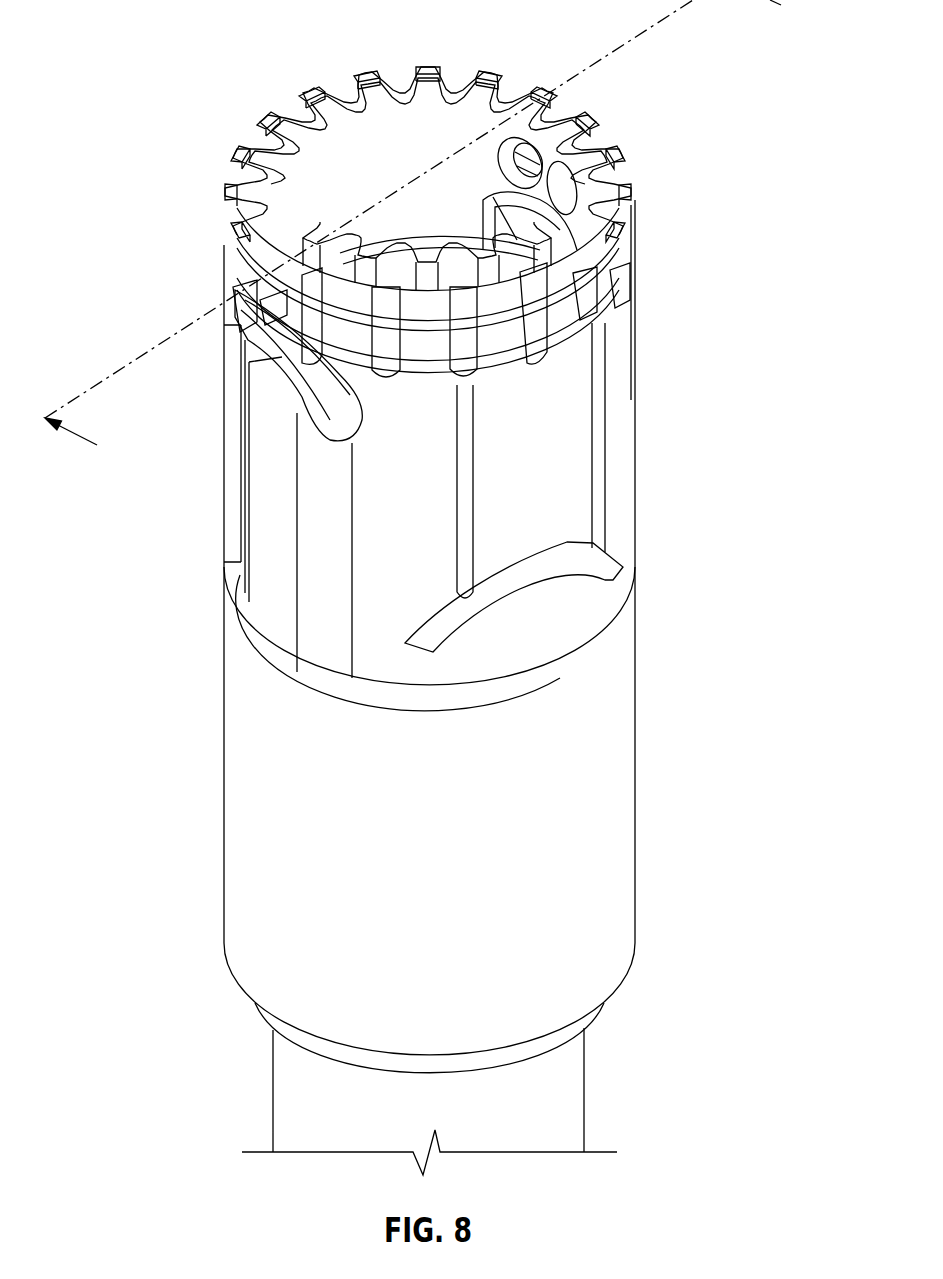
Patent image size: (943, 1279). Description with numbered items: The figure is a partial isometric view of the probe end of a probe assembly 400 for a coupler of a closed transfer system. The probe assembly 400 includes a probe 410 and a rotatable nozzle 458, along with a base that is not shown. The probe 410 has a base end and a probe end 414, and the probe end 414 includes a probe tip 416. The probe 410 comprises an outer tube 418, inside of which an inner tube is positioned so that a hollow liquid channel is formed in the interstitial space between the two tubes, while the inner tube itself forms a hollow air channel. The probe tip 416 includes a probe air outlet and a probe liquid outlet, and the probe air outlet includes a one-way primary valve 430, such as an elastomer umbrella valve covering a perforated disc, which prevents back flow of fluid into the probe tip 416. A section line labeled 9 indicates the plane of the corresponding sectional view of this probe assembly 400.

The probe assembly 400 is at (425, 587).
The section line 9- 9 is at (92, 30).
The one-way primary valve 430 is at (468, 258).
The probe tip 416 is at (664, 329).
The rotatable nozzle 458 is at (565, 425).
The probe end 414 is at (192, 987).
The probe 410 is at (317, 1125).
The outer tube 418 is at (585, 1090).